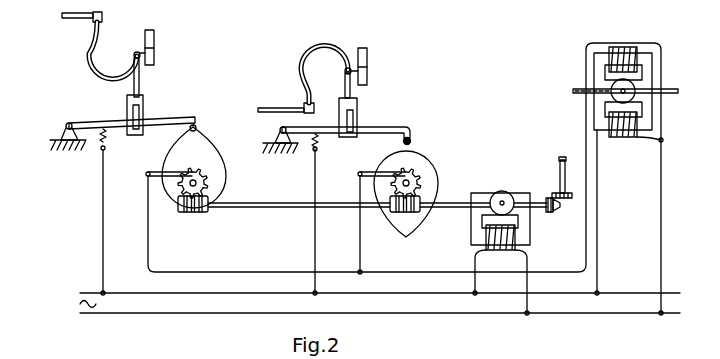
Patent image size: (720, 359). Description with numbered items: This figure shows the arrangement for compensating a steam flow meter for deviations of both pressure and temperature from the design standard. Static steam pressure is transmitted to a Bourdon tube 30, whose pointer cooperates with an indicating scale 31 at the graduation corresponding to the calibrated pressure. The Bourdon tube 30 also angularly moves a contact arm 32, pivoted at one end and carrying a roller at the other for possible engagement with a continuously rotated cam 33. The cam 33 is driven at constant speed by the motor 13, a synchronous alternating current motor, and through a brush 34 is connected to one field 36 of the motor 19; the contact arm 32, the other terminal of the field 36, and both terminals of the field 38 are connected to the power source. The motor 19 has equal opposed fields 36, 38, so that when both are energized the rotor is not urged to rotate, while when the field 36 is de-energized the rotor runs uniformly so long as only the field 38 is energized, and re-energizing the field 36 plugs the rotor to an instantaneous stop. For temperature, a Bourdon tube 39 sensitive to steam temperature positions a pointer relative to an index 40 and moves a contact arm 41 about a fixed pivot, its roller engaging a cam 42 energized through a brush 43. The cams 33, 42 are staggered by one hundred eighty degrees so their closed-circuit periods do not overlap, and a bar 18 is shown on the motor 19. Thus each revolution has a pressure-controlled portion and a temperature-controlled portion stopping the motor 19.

The motor 13 is at (475, 194).
The relay armature bar 18 is at (583, 95).
The motor 19 is at (653, 112).
The Bourdon tube 30 is at (302, 56).
The indicating scale 31 is at (368, 77).
The contact arm 32 is at (382, 125).
The cam 33 is at (441, 176).
The brush 34 is at (373, 170).
The field 36 is at (625, 47).
The field 38 is at (618, 138).
The Bourdon tube 39 is at (88, 70).
The index 40 is at (153, 50).
The contact arm 41 is at (158, 113).
The cam 42 is at (222, 160).
The brush 43 is at (160, 169).